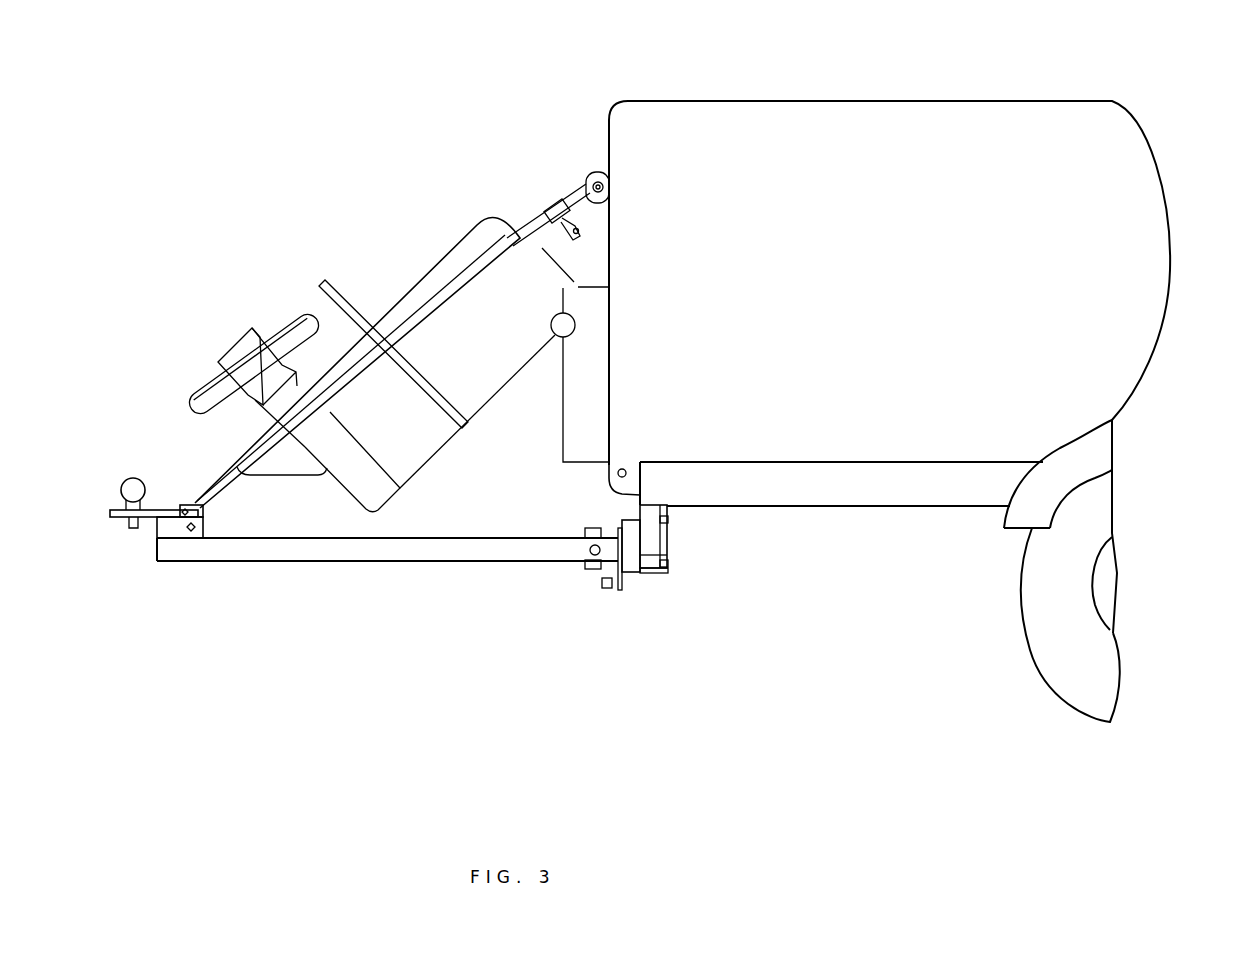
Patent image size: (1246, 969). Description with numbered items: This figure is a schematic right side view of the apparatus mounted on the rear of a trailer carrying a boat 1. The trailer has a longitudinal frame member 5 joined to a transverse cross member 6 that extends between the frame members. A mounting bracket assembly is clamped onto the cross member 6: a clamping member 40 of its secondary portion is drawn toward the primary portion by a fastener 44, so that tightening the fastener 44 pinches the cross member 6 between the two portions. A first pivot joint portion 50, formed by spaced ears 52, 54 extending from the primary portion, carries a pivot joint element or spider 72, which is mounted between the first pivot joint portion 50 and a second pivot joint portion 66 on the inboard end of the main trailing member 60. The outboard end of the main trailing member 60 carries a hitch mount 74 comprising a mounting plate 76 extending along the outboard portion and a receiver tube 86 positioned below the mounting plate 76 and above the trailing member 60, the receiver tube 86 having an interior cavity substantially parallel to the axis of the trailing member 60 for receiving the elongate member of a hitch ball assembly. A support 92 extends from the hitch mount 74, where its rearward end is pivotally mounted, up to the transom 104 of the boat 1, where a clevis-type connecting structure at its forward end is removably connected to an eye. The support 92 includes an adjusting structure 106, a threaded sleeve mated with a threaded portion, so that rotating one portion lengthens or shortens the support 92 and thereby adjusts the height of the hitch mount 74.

The boat 1 is at (697, 82).
The longitudinal frame member 5 is at (822, 490).
The transverse cross member 6 is at (668, 528).
The clamping member 40 is at (670, 548).
The fastener 44 is at (652, 573).
The first pivot joint portion 50 is at (607, 576).
The ear 52 is at (612, 530).
The ear 54 is at (593, 569).
The main trailing member 60 is at (350, 548).
The second pivot joint portion 66 is at (561, 537).
The pivot joint element 72 is at (623, 574).
The hitch mount 74 is at (167, 485).
The mounting plate 76 is at (107, 508).
The receiver tube 86 is at (172, 528).
The support 92 is at (450, 293).
The transom 104 is at (599, 171).
The adjusting structure 106 is at (532, 220).